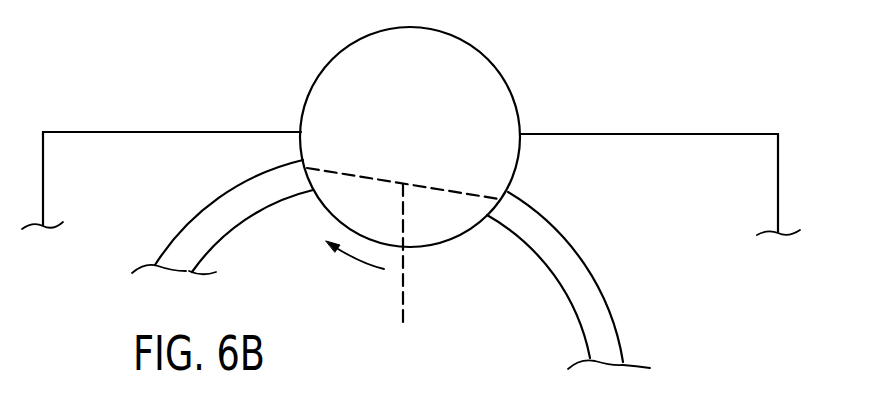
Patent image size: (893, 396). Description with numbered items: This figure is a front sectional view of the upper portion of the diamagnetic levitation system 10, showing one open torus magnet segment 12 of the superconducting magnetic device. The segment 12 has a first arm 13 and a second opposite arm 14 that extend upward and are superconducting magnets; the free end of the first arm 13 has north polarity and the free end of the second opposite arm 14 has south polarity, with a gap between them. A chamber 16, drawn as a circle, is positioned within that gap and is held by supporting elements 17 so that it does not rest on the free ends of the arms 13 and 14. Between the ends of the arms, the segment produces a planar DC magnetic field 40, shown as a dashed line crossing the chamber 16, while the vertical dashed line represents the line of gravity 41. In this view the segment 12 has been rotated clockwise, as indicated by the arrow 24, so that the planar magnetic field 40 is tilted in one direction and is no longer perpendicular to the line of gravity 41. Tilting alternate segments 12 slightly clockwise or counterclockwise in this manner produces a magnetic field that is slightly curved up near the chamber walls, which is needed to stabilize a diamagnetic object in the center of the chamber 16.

The diamagnetic levitation system 10 is at (261, 73).
The segment 12 is at (225, 217).
The first arm 13 is at (221, 198).
The second opposite arm 14 is at (585, 268).
The chamber 16 is at (491, 62).
The supporting elements 17 is at (650, 134).
The arrow 24 is at (357, 263).
The planar DC magnetic field 40 is at (431, 188).
The line of gravity 41 is at (404, 294).